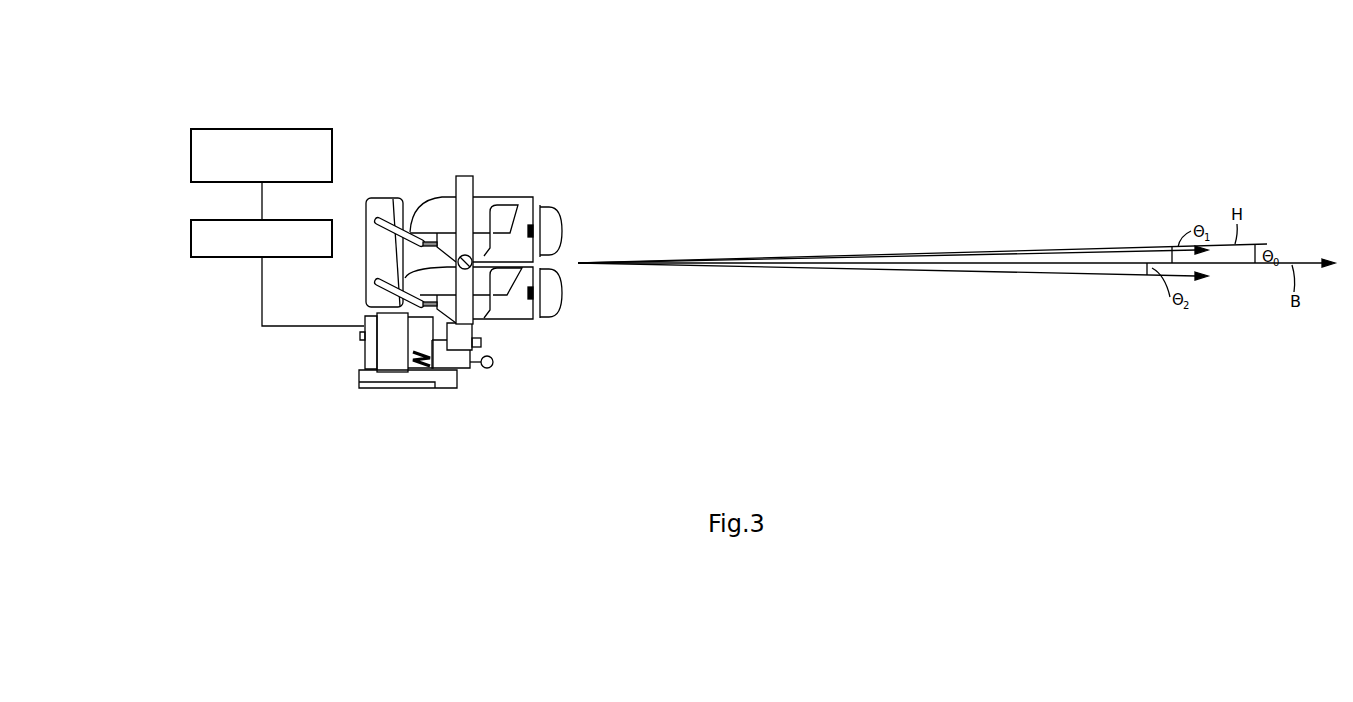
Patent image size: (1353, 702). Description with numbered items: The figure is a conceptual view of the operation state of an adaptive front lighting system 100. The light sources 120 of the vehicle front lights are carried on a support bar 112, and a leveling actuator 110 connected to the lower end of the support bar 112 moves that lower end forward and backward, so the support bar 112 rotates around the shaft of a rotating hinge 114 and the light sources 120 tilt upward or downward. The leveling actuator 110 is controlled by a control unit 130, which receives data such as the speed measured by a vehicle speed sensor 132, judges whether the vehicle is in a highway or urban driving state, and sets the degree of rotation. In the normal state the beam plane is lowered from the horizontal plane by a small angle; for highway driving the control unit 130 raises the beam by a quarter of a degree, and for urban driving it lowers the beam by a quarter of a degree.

The adaptive front lighting system 100 is at (517, 152).
The leveling actuator 110 is at (382, 346).
The support bar 112 is at (465, 183).
The rotating hinge 114 is at (475, 272).
The light sources 120 is at (563, 230).
The control unit 130 is at (191, 238).
The vehicle speed sensor 132 is at (191, 155).